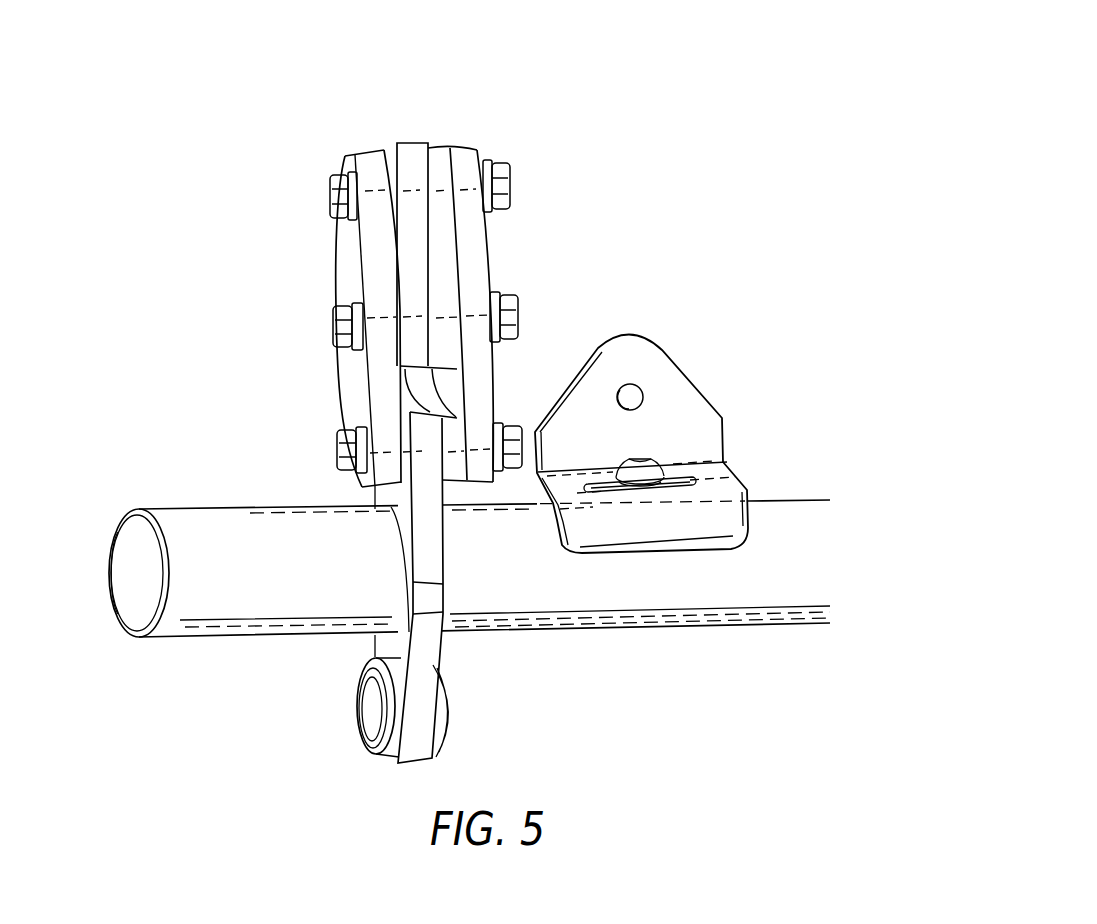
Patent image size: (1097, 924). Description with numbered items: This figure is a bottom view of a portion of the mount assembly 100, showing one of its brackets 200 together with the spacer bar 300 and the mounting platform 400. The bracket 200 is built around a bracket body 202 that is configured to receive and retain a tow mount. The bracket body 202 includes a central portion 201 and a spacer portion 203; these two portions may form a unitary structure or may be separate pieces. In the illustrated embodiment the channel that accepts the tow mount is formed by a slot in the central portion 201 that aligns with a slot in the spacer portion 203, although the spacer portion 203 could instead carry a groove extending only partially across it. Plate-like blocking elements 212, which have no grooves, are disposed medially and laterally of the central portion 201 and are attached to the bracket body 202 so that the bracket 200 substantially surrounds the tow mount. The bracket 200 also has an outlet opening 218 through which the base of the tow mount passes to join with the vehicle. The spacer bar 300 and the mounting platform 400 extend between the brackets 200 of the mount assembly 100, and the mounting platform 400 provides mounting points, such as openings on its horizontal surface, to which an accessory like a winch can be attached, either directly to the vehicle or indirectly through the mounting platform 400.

The mount assembly 100 is at (684, 150).
The bracket 200 is at (380, 124).
The central portion 201 is at (415, 143).
The bracket body 202 is at (460, 124).
The spacer portion 203 is at (443, 257).
The blocking element 212 is at (343, 261).
The outlet opening 218 is at (410, 412).
The spacer bar 300 is at (204, 507).
The mounting platform 400 is at (690, 393).